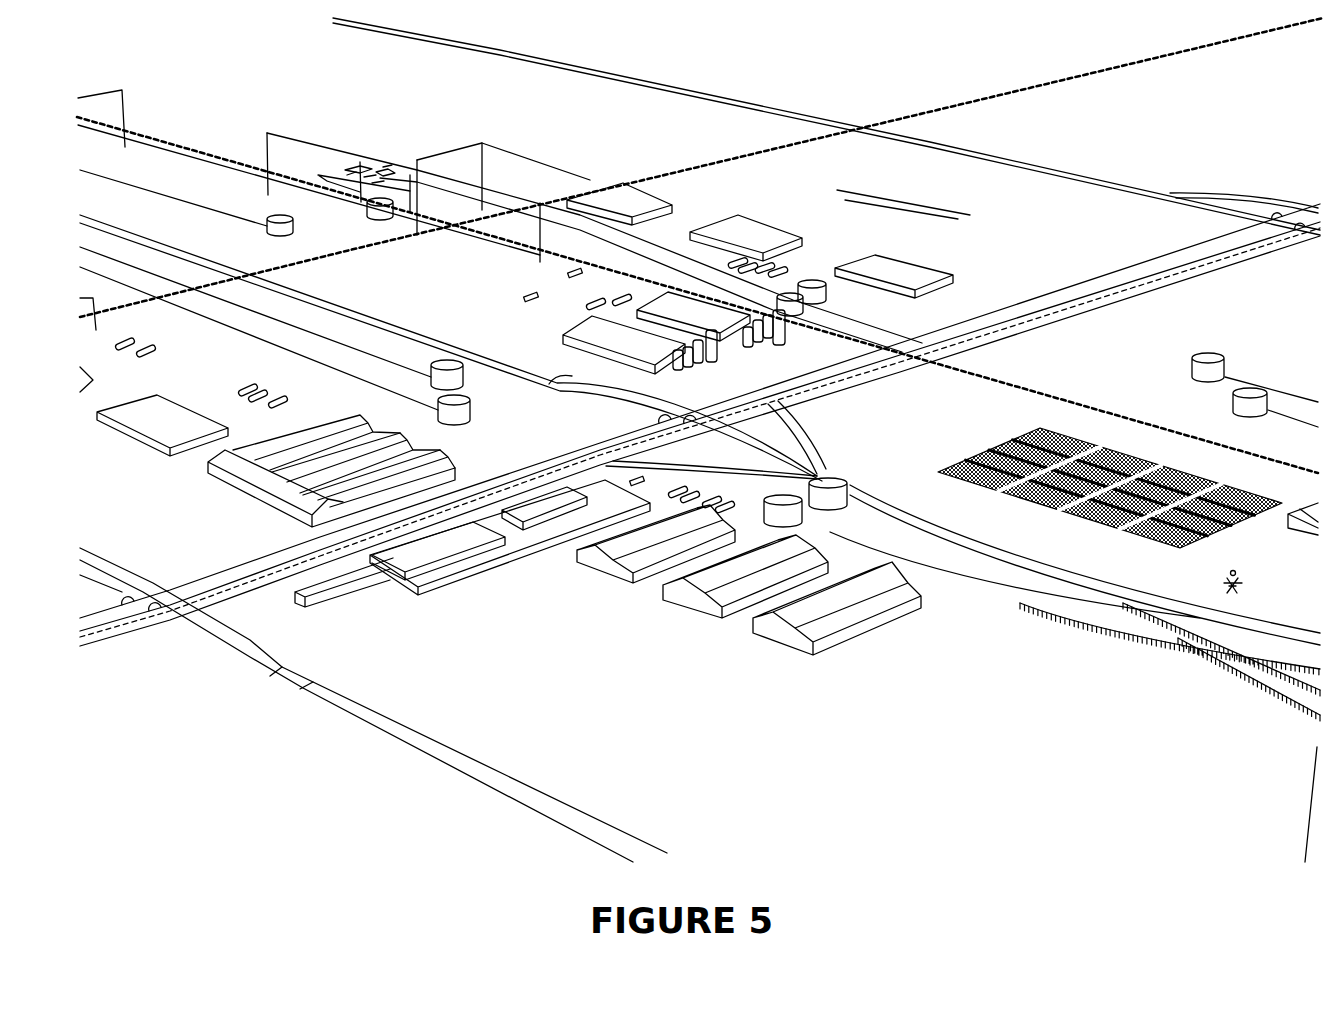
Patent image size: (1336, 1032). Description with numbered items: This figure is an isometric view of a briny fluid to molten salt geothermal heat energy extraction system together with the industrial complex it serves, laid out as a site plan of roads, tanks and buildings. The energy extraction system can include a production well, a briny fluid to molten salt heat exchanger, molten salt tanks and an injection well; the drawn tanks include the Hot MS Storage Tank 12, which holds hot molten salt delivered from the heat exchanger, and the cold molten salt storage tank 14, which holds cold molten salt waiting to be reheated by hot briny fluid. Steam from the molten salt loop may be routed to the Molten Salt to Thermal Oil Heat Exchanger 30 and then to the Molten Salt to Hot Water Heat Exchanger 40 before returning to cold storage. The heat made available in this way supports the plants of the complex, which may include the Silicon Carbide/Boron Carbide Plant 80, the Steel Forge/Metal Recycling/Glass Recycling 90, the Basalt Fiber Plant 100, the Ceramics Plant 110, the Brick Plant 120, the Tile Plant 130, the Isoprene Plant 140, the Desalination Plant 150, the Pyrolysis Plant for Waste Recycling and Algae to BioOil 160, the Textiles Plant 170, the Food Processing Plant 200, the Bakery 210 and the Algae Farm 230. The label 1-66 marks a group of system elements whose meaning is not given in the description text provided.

The sensor nodes 1-66 is at (383, 160).
The Hot MS Storage Tank 12 is at (840, 490).
The cold molten salt storage tank 14 is at (788, 498).
The Molten Salt to Thermal Oil Heat Exchanger 30 is at (583, 313).
The Molten Salt to Hot Water Heat Exchanger 40 is at (598, 297).
The Silicon Carbide/Boron Carbide Plant 80 is at (605, 192).
The Steel Forge/Metal Recycling/Glass Recycling 90 is at (741, 216).
The Basalt Fiber Plant 100 is at (892, 255).
The Ceramics Plant 110 is at (464, 580).
The Brick Plant 120 is at (459, 460).
The Tile Plant 130 is at (603, 575).
The Isoprene Plant 140 is at (690, 612).
The Desalination Plant 150 is at (185, 402).
The Pyrolysis Plant for Waste Recycling and Algae to BioOil 160 is at (1300, 500).
The Textiles Plant 170 is at (781, 648).
The Food Processing Plant 200 is at (744, 344).
The Bakery 210 is at (613, 358).
The Algae Farm 230 is at (1137, 540).